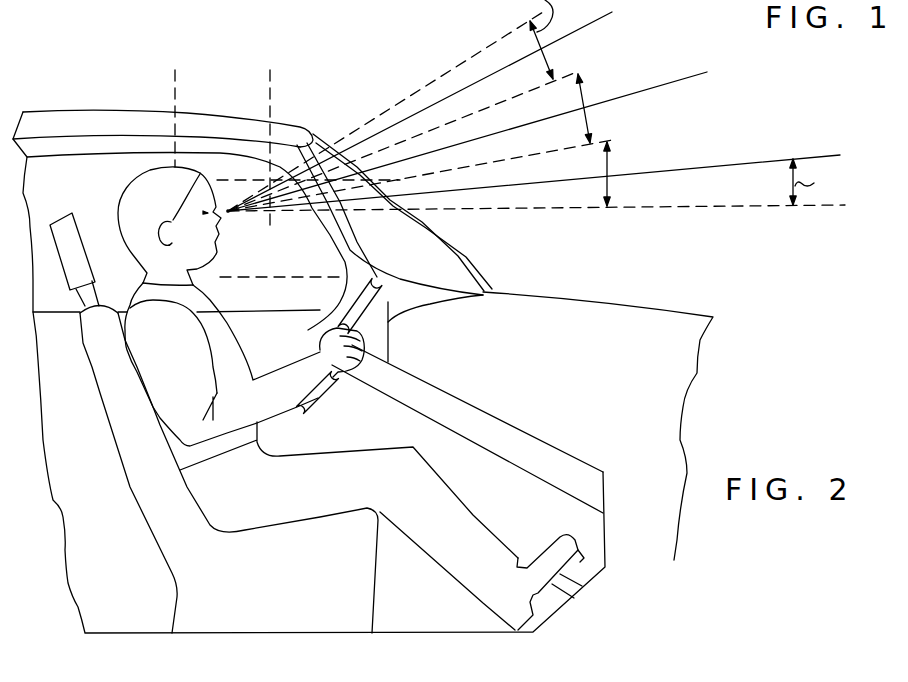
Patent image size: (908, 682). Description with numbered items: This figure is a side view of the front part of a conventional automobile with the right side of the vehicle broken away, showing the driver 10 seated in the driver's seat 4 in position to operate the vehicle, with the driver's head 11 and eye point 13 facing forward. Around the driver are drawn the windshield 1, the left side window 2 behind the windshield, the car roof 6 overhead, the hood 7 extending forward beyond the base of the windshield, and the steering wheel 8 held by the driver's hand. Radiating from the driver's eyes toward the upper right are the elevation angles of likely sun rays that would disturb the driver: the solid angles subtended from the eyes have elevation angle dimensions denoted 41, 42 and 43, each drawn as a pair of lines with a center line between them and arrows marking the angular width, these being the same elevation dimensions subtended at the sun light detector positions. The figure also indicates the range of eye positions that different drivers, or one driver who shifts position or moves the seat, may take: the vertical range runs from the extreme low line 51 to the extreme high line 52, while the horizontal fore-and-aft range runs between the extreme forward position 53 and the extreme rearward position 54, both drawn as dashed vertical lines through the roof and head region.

The windshield 1 is at (453, 242).
The left side window 2 is at (107, 163).
The driver's seat 4 is at (93, 375).
The car roof 6 is at (212, 97).
The hood 7 is at (600, 298).
The steering wheel 8 is at (337, 326).
The driver 10 is at (147, 360).
The driver head 11 is at (119, 208).
The eye point 13 is at (229, 218).
The elevation angle (first solid angle) 41 is at (666, 182).
The elevation angle (second solid angle) 42 is at (598, 108).
The elevation angle (third solid angle) 43 is at (570, 32).
The extreme low eye height line 51 is at (260, 279).
The extreme high eye height line 52 is at (243, 180).
The extreme forward eye position 53 is at (275, 100).
The extreme rearward eye position 54 is at (173, 97).